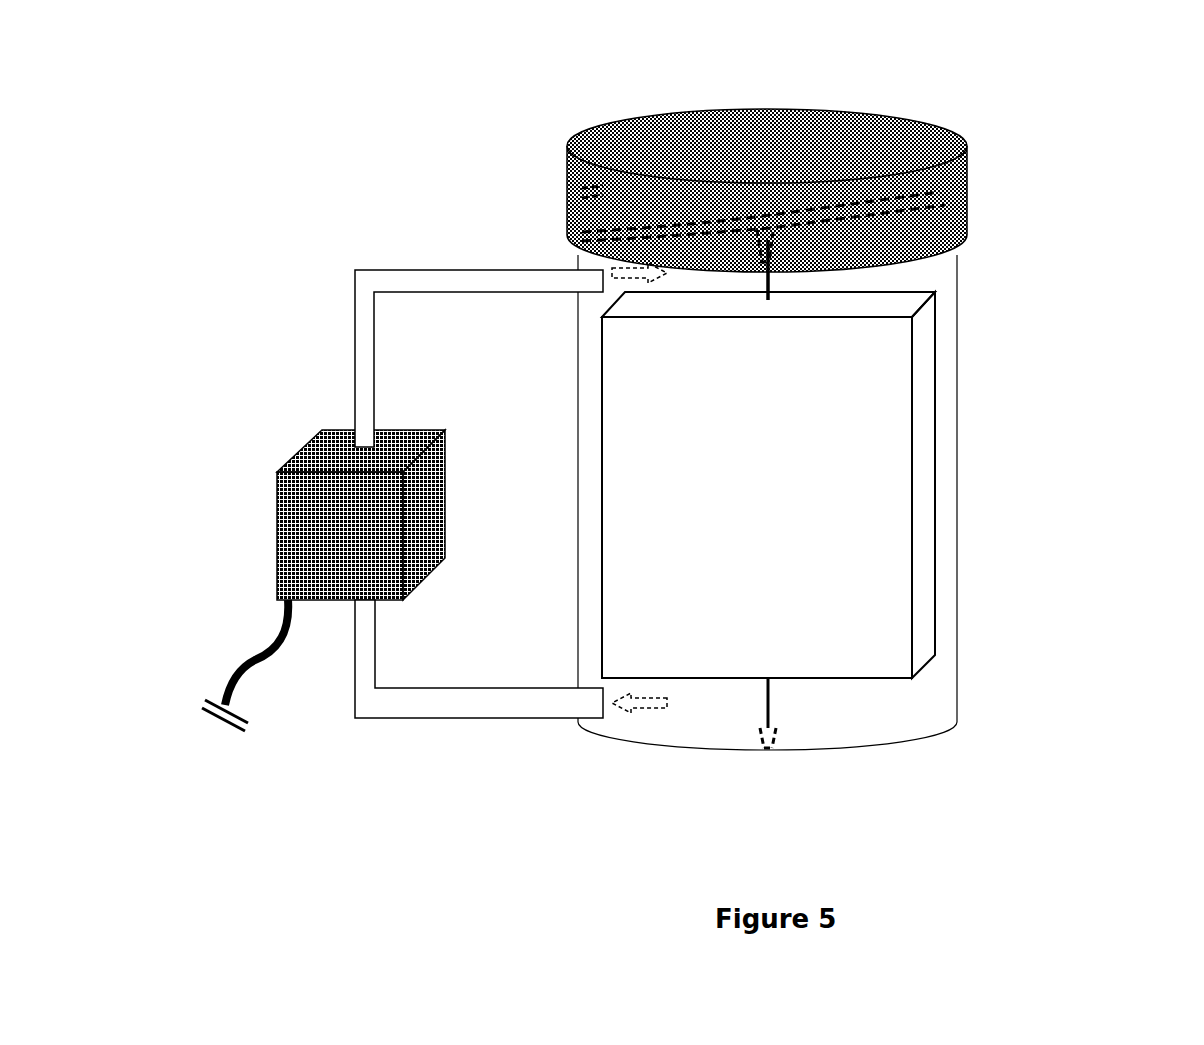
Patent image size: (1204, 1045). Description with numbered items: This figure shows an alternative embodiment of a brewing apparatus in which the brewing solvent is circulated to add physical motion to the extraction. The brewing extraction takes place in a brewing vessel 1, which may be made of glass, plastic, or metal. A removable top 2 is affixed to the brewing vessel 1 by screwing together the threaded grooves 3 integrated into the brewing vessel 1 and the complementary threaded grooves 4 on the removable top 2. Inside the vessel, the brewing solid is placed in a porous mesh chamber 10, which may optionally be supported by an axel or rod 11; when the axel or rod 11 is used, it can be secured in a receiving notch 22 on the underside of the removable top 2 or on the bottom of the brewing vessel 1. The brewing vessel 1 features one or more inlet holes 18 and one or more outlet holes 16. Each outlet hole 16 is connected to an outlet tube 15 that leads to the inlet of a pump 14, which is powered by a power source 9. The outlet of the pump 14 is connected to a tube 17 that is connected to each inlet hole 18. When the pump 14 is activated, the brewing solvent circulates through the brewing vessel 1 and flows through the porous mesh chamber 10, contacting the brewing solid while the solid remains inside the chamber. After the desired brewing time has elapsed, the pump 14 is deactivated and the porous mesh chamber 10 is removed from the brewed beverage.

The brewing vessel 1 is at (957, 430).
The removable top 2 is at (968, 185).
The threaded grooves 3 is at (905, 213).
The threaded grooves 4 is at (830, 230).
The power source 9 is at (238, 708).
The porous mesh chamber 10 is at (890, 580).
The axel or rod 11 is at (768, 300).
The pump 14 is at (320, 455).
The outlet tube 15 is at (480, 718).
The outlet hole 16 is at (603, 713).
The tube 17 is at (357, 342).
The inlet hole 18 is at (603, 275).
The receiving notch 22 is at (760, 232).